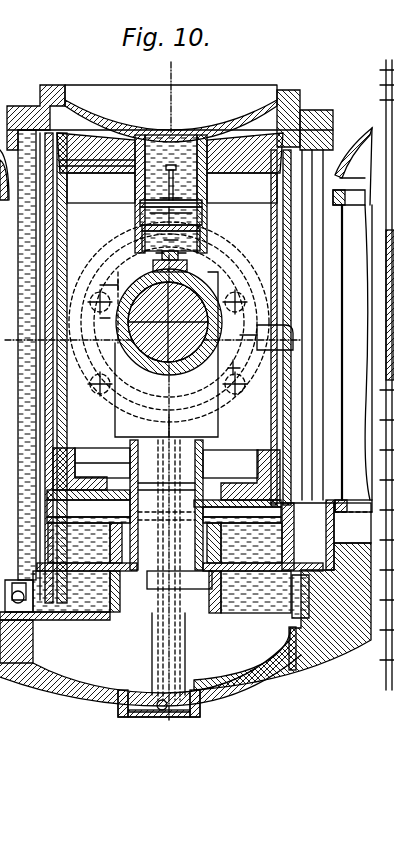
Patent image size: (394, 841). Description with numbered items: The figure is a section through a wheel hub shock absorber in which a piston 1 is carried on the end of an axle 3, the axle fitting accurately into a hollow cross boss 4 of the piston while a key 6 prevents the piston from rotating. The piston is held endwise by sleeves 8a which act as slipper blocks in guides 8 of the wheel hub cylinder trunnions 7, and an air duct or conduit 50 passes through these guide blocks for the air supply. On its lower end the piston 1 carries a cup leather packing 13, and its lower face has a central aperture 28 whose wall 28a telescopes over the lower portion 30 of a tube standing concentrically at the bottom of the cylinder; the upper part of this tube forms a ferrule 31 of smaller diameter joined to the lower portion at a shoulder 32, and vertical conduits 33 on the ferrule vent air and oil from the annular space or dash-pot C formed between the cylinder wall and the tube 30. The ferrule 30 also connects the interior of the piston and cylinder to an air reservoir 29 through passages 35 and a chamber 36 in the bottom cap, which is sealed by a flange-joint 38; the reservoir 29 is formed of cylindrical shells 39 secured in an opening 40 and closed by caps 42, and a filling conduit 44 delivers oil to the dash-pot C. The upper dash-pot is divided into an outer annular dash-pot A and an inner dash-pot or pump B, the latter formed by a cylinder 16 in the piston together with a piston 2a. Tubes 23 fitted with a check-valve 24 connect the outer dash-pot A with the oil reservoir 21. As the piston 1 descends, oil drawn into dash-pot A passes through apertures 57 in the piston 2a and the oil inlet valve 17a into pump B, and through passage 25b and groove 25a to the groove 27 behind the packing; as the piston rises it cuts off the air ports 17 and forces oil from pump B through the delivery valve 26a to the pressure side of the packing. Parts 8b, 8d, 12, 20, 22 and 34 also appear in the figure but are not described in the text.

The piston 1 is at (66, 222).
The piston of inner dash-pot 2a is at (96, 168).
The axle 3 is at (166, 354).
The hollow cross boss 4 is at (169, 328).
The key 6 is at (187, 268).
The wheel hub cylinder trunnions 7 is at (246, 424).
The guides 8 is at (112, 410).
The sleeves 8a is at (108, 283).
The bolt 8b is at (169, 343).
The bolt 8d is at (159, 420).
The plate 12 is at (164, 514).
The packing 13 is at (164, 504).
The cylinder 16 is at (137, 192).
The air ports 17 is at (300, 160).
The oil inlet valve 17a is at (142, 208).
The block 20 is at (328, 525).
The oil reservoir 21 is at (246, 608).
The cylinder 22 is at (68, 610).
The tubes 23 is at (307, 325).
The check-valve 24 is at (24, 604).
The groove 25a is at (58, 240).
The passage 25b is at (245, 168).
The delivery valve 26a is at (150, 235).
The groove 27 is at (268, 493).
The aperture 28 is at (203, 497).
The wall of aperture 28a is at (216, 492).
The air reservoir 29 is at (358, 352).
The tube 30 is at (200, 566).
The ferrule 31 is at (139, 470).
The shoulder 32 is at (203, 512).
The vertical conduits 33 is at (118, 548).
The dish 34 is at (120, 120).
The passage 35 is at (330, 643).
The chamber 36 is at (150, 659).
The flange-joint 38 is at (150, 262).
The cylindrical shells 39 is at (343, 282).
The opening 40 is at (353, 514).
The caps 42 is at (352, 166).
The filling conduit 44 is at (156, 648).
The air duct 50 is at (257, 341).
The ports 57 is at (146, 140).
The outer annular dash-pot A is at (305, 128).
The inner dash-pot or pump B is at (202, 216).
The annular space or dash-pot C is at (230, 538).